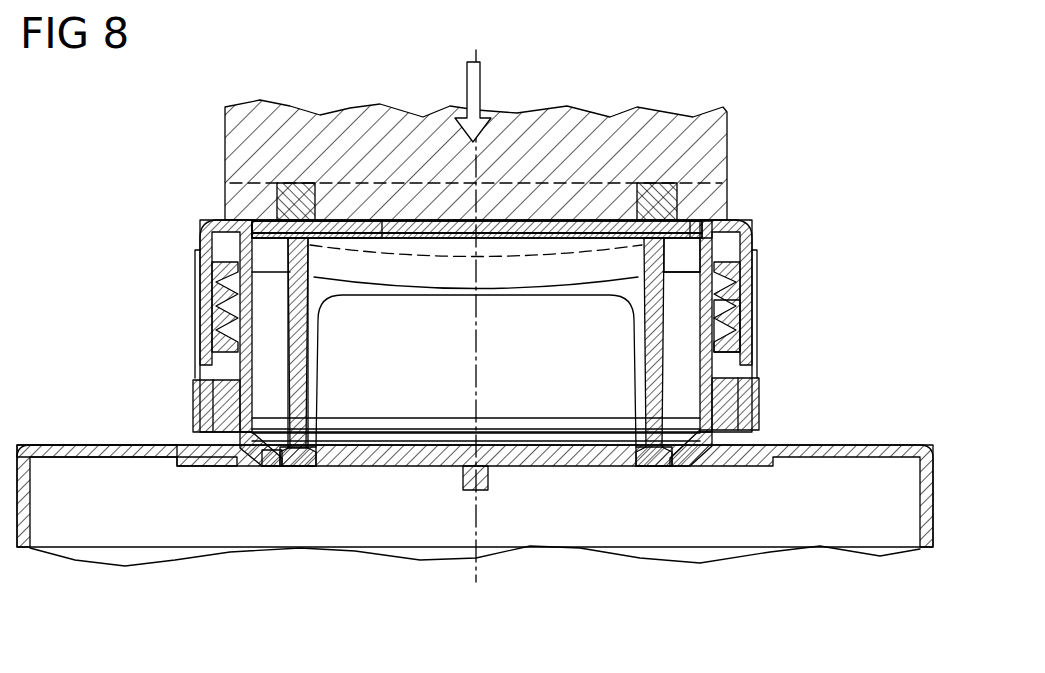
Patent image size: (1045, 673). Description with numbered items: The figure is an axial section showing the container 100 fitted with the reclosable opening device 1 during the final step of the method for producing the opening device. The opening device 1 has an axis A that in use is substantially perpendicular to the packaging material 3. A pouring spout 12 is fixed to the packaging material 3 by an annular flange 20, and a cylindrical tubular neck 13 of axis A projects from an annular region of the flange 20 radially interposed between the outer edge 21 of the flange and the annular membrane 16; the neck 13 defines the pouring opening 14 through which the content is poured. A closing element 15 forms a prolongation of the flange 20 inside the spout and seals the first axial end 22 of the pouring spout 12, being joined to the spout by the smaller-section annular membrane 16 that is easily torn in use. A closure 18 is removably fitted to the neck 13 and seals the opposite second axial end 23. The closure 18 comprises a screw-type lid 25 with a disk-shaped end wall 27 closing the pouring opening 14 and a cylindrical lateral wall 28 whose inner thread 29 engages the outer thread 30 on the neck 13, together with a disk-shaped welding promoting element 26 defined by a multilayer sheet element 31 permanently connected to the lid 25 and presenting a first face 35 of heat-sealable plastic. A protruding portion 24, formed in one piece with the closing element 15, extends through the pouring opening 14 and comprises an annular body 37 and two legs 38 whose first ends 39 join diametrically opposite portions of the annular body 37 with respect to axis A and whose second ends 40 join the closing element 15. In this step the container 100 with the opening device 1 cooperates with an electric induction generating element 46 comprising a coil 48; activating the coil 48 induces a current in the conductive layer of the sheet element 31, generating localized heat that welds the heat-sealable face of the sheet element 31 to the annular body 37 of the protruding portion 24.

The reclosable opening device 1 is at (754, 203).
The packaging material 3 is at (832, 462).
The pouring spout 12 is at (746, 236).
The cylindrical tubular neck 13 is at (236, 368).
The pouring opening 14 is at (262, 320).
The closing element 15 is at (414, 468).
The annular membrane 16 is at (281, 468).
The closure 18 is at (507, 218).
The annular flange 20 is at (236, 468).
The outer edge 21 is at (172, 460).
The first axial end 22 is at (735, 435).
The second axial end 23 is at (704, 242).
The protruding portion 24 is at (393, 238).
The lid 25 is at (597, 218).
The welding promoting element 26 is at (437, 220).
The end wall 27 is at (560, 236).
The lateral wall 28 is at (746, 314).
The inner thread 29 is at (214, 290).
The outer thread 30 is at (736, 330).
The multilayer sheet element 31 is at (418, 244).
The first face 35 is at (327, 220).
The annular body 37 is at (668, 250).
The legs 38 is at (308, 395).
The first ends 39 is at (340, 296).
The second ends 40 is at (323, 447).
The electric induction generating element 46 is at (222, 140).
The coil 48 is at (278, 200).
The container 100 is at (47, 428).
The axis A is at (474, 362).